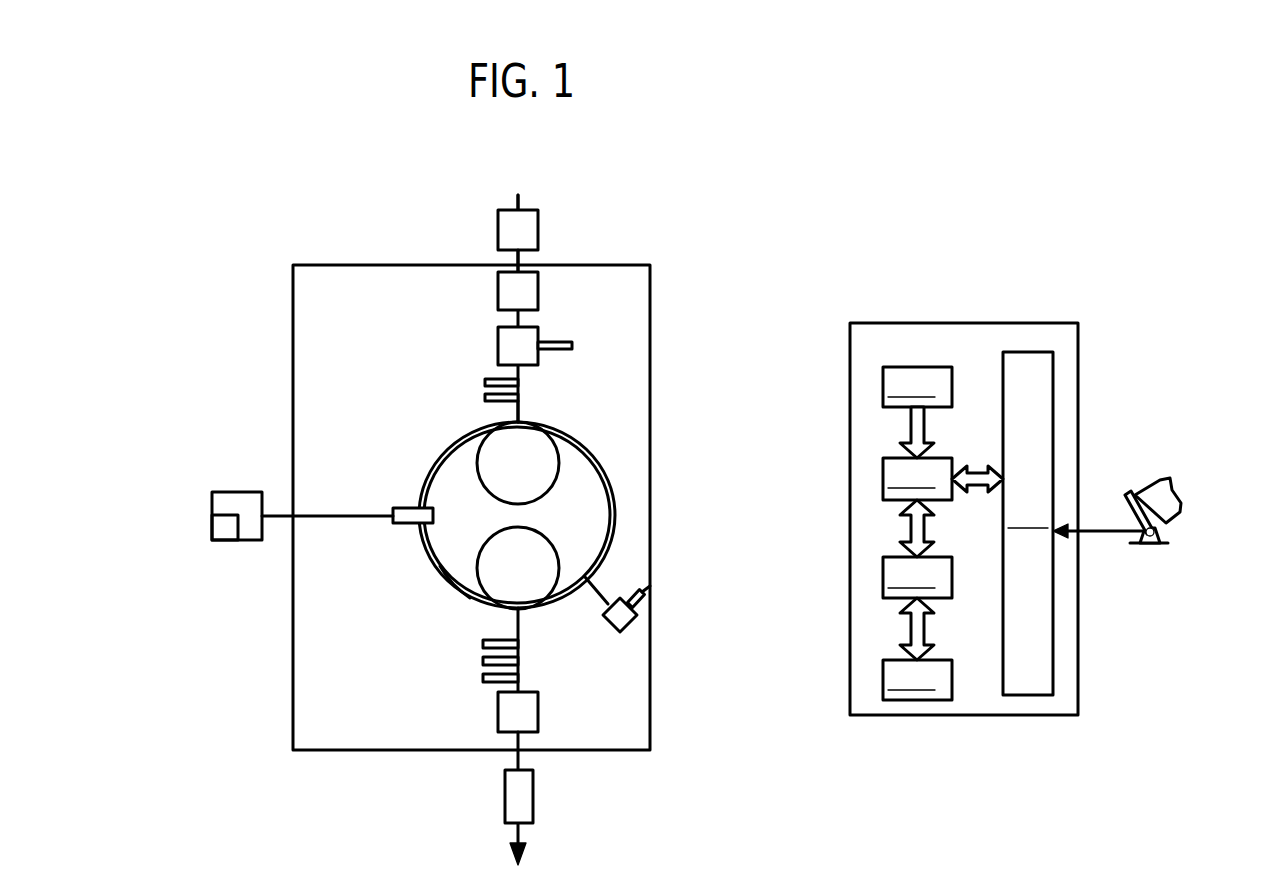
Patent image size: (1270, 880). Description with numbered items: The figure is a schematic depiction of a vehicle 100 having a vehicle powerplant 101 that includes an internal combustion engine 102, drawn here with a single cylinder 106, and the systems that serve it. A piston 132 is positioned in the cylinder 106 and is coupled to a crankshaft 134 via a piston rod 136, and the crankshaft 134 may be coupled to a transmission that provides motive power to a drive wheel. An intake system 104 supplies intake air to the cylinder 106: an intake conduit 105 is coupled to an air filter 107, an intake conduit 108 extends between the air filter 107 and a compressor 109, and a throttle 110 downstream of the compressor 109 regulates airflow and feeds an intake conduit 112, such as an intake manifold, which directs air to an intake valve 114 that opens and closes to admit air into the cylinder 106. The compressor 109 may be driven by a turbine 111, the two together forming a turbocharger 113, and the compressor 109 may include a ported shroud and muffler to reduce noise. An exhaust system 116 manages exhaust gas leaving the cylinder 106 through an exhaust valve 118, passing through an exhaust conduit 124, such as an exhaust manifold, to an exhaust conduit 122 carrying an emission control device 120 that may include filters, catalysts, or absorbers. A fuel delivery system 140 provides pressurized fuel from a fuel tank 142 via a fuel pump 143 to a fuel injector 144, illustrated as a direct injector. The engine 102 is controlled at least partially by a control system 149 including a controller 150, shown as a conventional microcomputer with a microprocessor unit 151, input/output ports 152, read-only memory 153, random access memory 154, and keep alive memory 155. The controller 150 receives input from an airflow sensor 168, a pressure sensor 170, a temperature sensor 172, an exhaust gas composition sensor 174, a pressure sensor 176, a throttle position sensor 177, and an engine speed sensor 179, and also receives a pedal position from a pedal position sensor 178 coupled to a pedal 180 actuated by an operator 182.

The vehicle 100 is at (1222, 170).
The vehicle powerplant 101 is at (768, 299).
The internal combustion engine 102 is at (670, 343).
The intake system 104 is at (618, 243).
The intake conduit 105 is at (520, 205).
The cylinder 106 is at (456, 438).
The air filter 107 is at (498, 243).
The intake conduit 108 is at (520, 262).
The compressor 109 is at (498, 306).
The throttle 110 is at (498, 358).
The turbine 111 is at (538, 728).
The intake conduit 112 is at (522, 421).
The turbocharger 113 is at (441, 278).
The intake valve 114 is at (560, 462).
The exhaust system 116 is at (635, 793).
The exhaust valve 118 is at (560, 558).
The emission control device 120 is at (505, 808).
The exhaust conduit 122 is at (521, 838).
The exhaust conduit 124 is at (517, 619).
The piston 132 is at (447, 580).
The crankshaft 134 is at (606, 620).
The piston rod 136 is at (603, 592).
The fuel delivery system 140 is at (183, 488).
The fuel tank 142 is at (218, 492).
The fuel pump 143 is at (238, 530).
The fuel injector 144 is at (416, 508).
The control system 149 is at (1176, 672).
The controller 150 is at (860, 323).
The microprocessor unit 151 is at (940, 458).
The input/output ports 152 is at (1003, 385).
The read-only memory 153 is at (888, 367).
The random access memory 154 is at (941, 557).
The keep alive memory 155 is at (941, 660).
The airflow sensor 168 is at (485, 382).
The pressure sensor 170 is at (485, 398).
The temperature sensor 172 is at (483, 643).
The exhaust gas composition sensor 174 is at (483, 661).
The pressure sensor 176 is at (483, 678).
The throttle position sensor 177 is at (572, 346).
The pedal position sensor 178 is at (1162, 538).
The engine speed sensor 179 is at (648, 588).
The pedal 180 is at (1128, 501).
The operator 182 is at (1181, 492).